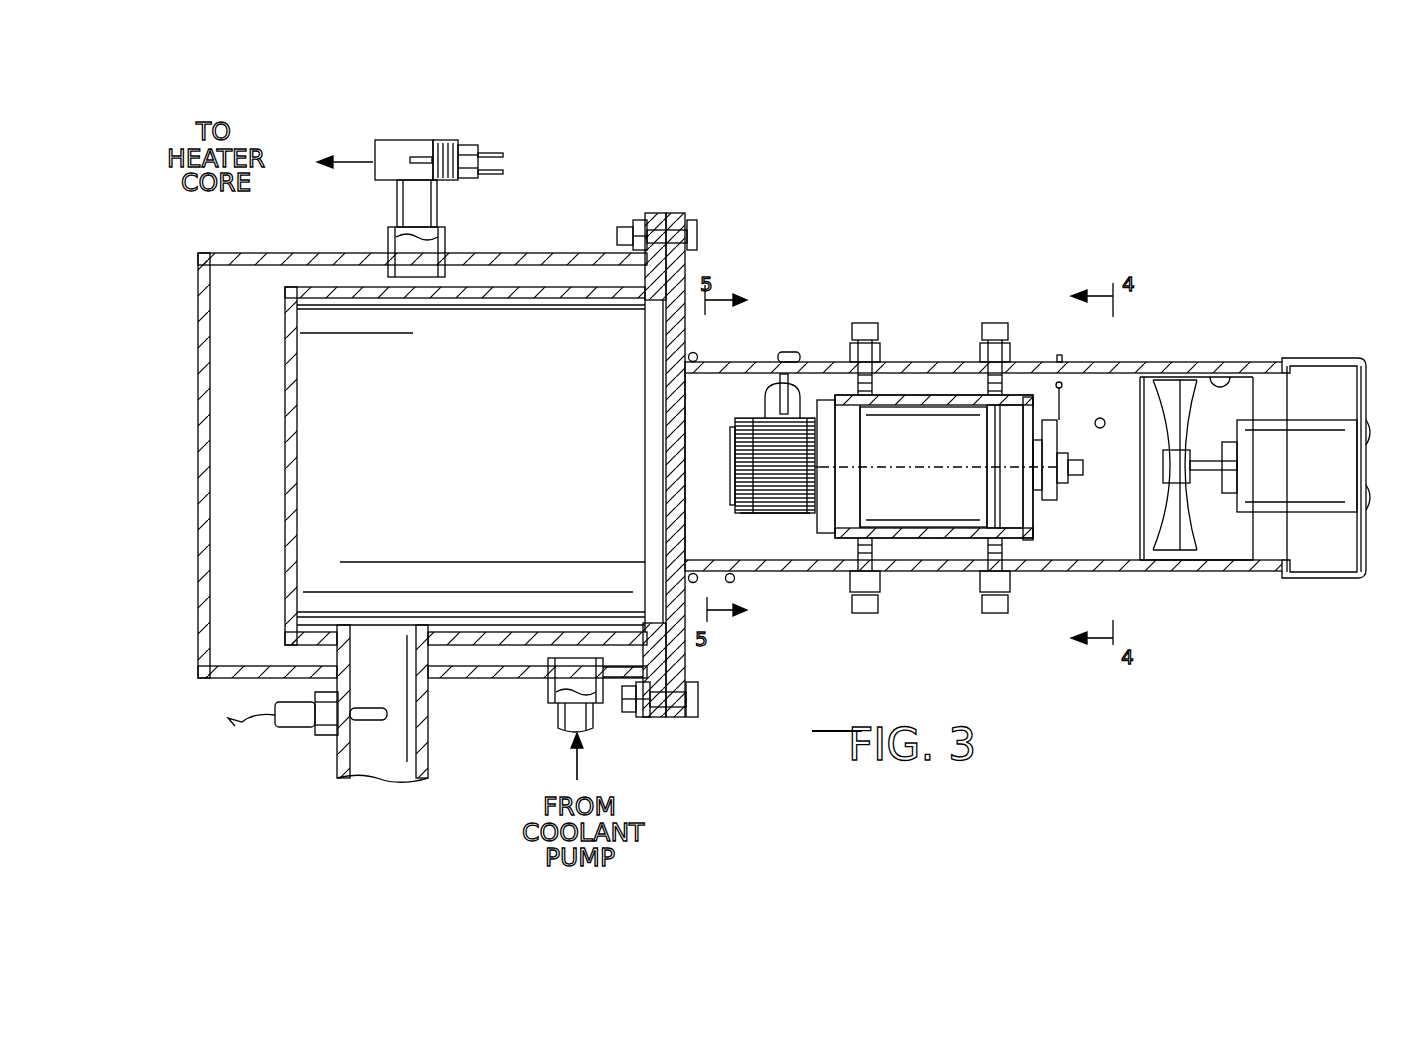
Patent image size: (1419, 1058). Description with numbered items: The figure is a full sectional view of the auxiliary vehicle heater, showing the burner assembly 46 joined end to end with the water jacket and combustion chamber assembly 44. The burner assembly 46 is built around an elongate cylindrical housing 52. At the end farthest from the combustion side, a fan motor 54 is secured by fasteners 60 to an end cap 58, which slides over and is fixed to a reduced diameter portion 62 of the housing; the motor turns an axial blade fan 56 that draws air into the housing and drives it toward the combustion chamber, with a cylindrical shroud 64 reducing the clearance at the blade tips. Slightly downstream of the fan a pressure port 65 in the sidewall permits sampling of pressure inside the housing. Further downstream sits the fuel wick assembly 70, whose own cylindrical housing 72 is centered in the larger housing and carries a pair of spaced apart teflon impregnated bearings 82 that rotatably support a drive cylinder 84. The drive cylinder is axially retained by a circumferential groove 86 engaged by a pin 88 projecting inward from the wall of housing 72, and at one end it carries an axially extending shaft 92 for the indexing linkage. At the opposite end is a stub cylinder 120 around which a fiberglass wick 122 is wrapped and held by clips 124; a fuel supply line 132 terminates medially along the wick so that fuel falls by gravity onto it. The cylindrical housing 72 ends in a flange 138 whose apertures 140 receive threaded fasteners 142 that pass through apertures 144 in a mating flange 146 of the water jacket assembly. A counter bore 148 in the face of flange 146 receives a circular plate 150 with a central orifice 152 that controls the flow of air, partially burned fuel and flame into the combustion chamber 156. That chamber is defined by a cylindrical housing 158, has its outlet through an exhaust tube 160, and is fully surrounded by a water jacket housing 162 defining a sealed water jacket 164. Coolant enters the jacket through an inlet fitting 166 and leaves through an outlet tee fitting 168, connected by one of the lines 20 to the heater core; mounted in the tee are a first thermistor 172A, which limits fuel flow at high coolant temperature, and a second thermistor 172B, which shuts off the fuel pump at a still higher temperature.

The lines 20 is at (407, 212).
The water jacket and combustion chamber assembly 44 is at (526, 163).
The burner assembly 46 is at (1098, 238).
The elongate cylindrical housing 52 is at (890, 362).
The fan motor 54 is at (1325, 476).
The axial blade fan 56 is at (1178, 565).
The end cap 58 is at (1368, 383).
The fasteners 60 is at (1367, 507).
The reduced diameter portion 62 is at (1268, 572).
The shroud 64 is at (1232, 377).
The pressure port 65 is at (1103, 420).
The fuel wick assembly 70 is at (835, 312).
The cylindrical housing 72 is at (910, 572).
The annular teflon impregnated bearings 82 is at (823, 572).
The drive cylinder 84 is at (930, 447).
The circumferential groove 86 is at (987, 430).
The pin 88 is at (946, 572).
The shaft 92 is at (1073, 482).
The stub cylinder 120 is at (730, 467).
The fiberglass wick 122 is at (763, 417).
The clips 124 is at (805, 513).
The fuel supply line 132 is at (697, 355).
The flange 138 is at (683, 270).
The apertures 140 is at (680, 220).
The threaded fasteners 142 is at (698, 700).
The apertures 144 is at (662, 705).
The flange 146 is at (647, 217).
The counter bore 148 is at (645, 305).
The circular plate 150 is at (665, 527).
The orifice 152 is at (666, 440).
The combustion chamber 156 is at (487, 453).
The cylindrical housing 158 is at (448, 300).
The exhaust tube 160 is at (347, 735).
The water jacket housing 162 is at (200, 442).
The water jacket 164 is at (270, 503).
The inlet fitting 166 is at (548, 700).
The outlet tee fitting 168 is at (443, 228).
The first thermistor 172A is at (490, 147).
The second thermistor 172B is at (500, 170).